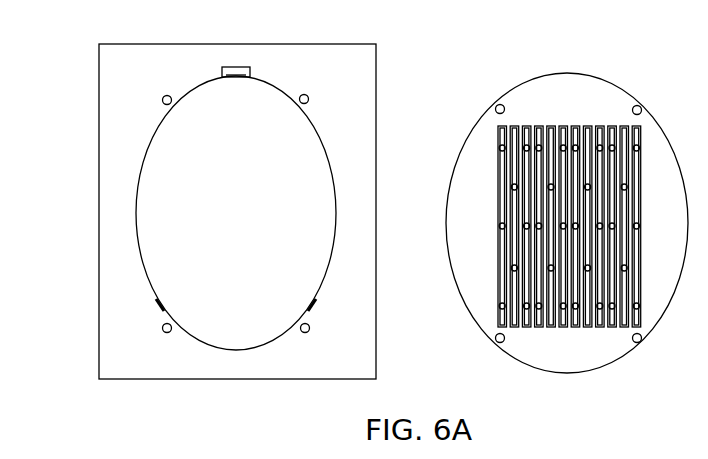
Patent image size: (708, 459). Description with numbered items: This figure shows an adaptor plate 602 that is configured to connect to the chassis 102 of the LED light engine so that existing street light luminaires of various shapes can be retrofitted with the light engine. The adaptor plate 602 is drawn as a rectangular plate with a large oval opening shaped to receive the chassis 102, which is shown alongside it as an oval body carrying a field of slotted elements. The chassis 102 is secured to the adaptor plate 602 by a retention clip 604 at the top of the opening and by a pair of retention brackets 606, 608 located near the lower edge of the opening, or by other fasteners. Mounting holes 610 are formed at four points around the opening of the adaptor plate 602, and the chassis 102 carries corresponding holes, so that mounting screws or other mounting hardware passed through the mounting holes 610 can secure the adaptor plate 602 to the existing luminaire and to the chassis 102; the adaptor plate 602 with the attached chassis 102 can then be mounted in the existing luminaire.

The chassis 102 is at (551, 213).
The adaptor plate 602 is at (195, 211).
The retention clip 604 is at (266, 48).
The retention bracket 606 is at (102, 326).
The retention bracket 608 is at (369, 326).
The mounting holes 610 is at (353, 176).